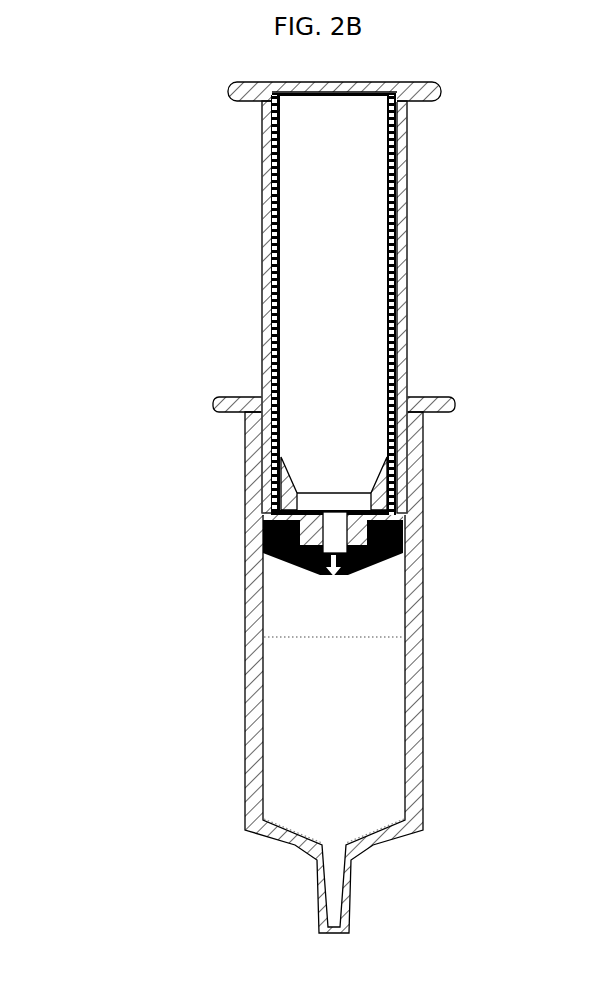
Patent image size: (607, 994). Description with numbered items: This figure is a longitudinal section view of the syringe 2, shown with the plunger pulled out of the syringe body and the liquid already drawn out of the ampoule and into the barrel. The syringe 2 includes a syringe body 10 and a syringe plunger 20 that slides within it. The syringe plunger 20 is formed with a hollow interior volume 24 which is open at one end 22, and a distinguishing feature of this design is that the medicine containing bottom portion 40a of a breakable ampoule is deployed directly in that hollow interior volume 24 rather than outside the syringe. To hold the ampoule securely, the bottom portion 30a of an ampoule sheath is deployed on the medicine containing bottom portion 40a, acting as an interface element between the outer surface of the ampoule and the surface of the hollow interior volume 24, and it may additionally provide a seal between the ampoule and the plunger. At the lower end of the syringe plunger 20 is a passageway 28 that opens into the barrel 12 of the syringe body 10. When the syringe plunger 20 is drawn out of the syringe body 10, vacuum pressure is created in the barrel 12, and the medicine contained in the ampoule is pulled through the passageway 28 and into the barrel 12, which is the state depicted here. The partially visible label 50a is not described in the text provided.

The syringe 2 is at (142, 280).
The syringe body 10 is at (247, 467).
The barrel 12 is at (247, 707).
The syringe plunger 20 is at (397, 213).
The open end 22 is at (358, 82).
The hollow interior volume 24 is at (272, 192).
The passageway 28 is at (333, 541).
The bottom portion of the ampoule sheath 30a is at (393, 273).
The medicine containing bottom portion of the ampoule 40a is at (300, 352).
The partial label 50a is at (22, 511).